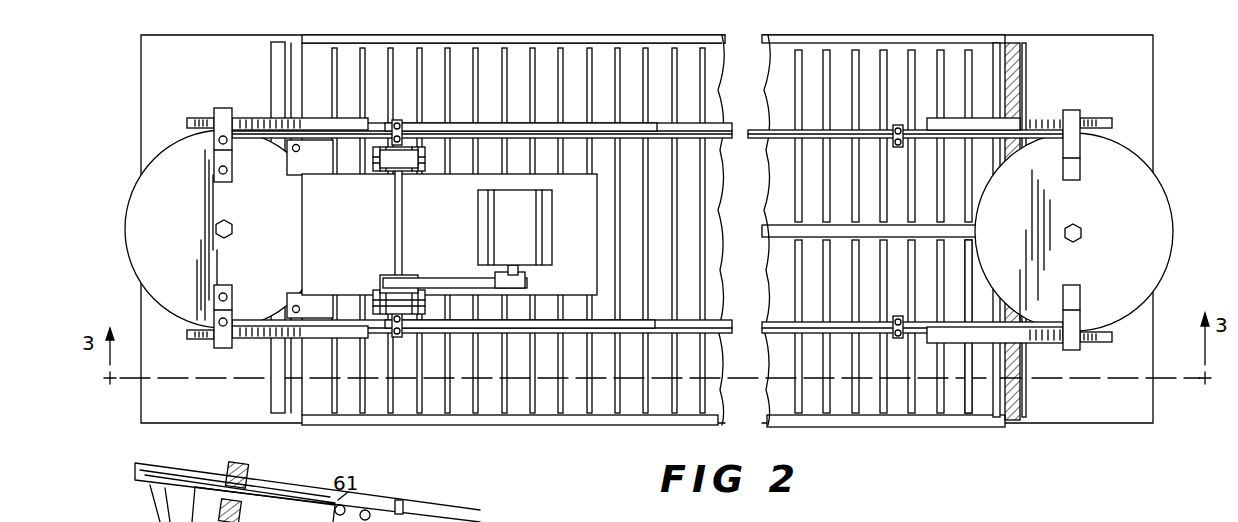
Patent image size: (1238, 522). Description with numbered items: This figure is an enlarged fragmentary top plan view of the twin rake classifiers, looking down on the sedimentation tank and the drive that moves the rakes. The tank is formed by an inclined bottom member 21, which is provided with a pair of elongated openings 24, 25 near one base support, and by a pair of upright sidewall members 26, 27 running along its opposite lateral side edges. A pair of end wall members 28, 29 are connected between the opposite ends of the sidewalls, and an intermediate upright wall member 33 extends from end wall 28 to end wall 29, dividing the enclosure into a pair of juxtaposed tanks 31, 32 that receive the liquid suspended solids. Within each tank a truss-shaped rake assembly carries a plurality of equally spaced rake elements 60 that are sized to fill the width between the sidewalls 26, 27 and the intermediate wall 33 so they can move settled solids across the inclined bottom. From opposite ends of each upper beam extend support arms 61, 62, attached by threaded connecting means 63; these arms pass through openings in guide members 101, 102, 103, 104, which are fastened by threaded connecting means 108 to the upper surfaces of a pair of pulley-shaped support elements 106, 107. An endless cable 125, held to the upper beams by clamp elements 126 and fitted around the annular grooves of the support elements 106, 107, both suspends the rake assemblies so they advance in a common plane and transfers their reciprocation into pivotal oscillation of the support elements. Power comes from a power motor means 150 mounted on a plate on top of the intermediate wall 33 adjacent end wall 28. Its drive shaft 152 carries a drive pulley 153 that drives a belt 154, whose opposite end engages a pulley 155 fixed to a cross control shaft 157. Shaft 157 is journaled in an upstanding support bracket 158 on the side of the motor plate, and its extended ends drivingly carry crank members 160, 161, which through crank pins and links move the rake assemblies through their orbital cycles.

The bottom member 21 is at (1142, 435).
The elongated opening 24 is at (275, 63).
The elongated opening 25 is at (275, 392).
The upright sidewall member 26 is at (836, 38).
The upright sidewall member 27 is at (906, 428).
The end wall member 28 is at (312, 408).
The end wall member 29 is at (996, 408).
The tank 31 is at (572, 62).
The tank 32 is at (953, 408).
The intermediate upright wall member 33 is at (785, 234).
The rake elements 60 is at (500, 58).
The support arm 61 is at (188, 122).
The support arm 62 is at (1112, 117).
The threaded connecting means 63 is at (372, 500).
The guide member 101 is at (212, 148).
The guide member 102 is at (232, 320).
The guide member 103 is at (1080, 152).
The guide member 104 is at (1080, 322).
The pulley-shaped support element 106 is at (148, 240).
The pulley-shaped support element 107 is at (1160, 242).
The threaded connecting means 108 is at (228, 172).
The endless cable 125 is at (258, 333).
The clamp elements 126 is at (405, 502).
The power motor means 150 is at (528, 226).
The drive shaft 152 is at (518, 270).
The drive pulley 153 is at (494, 278).
The belt 154 is at (432, 278).
The pulley 155 is at (384, 275).
The cross control shaft 157 is at (403, 215).
The upstanding support bracket 158 is at (376, 168).
The crank member 160 is at (424, 160).
The crank member 161 is at (372, 292).